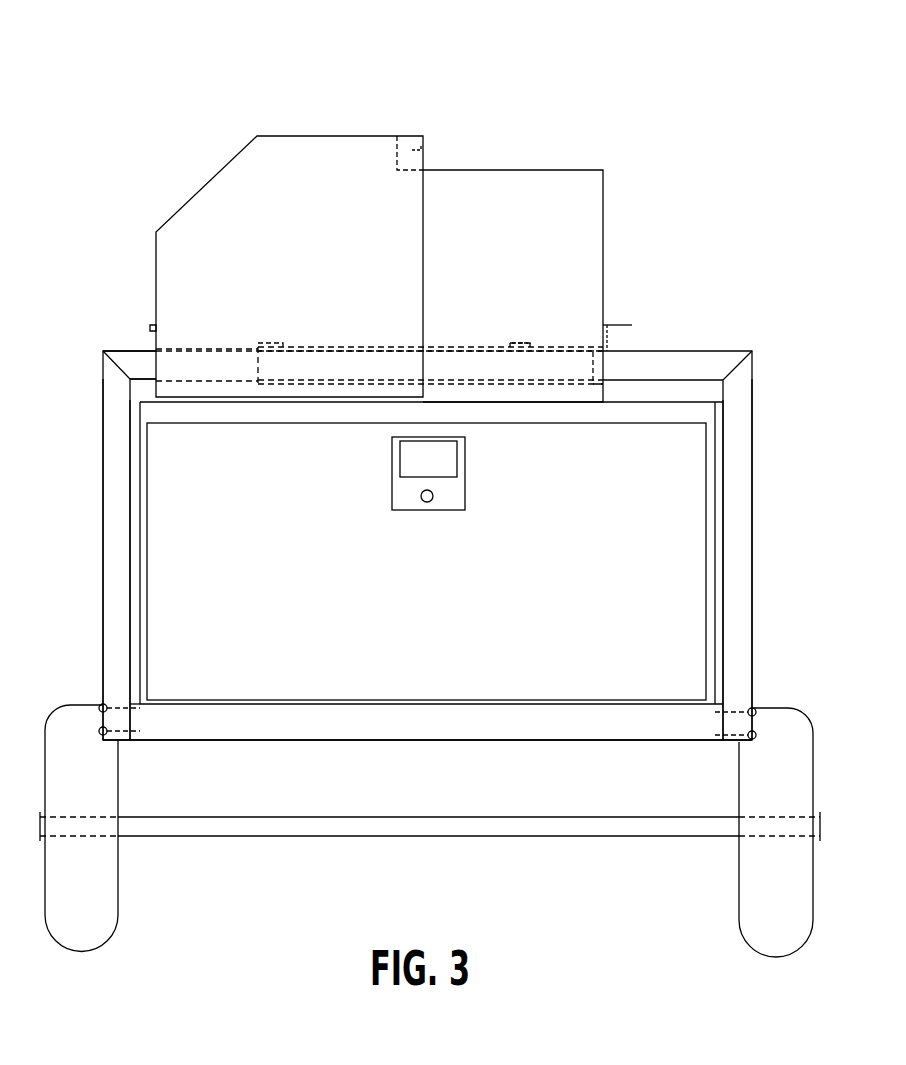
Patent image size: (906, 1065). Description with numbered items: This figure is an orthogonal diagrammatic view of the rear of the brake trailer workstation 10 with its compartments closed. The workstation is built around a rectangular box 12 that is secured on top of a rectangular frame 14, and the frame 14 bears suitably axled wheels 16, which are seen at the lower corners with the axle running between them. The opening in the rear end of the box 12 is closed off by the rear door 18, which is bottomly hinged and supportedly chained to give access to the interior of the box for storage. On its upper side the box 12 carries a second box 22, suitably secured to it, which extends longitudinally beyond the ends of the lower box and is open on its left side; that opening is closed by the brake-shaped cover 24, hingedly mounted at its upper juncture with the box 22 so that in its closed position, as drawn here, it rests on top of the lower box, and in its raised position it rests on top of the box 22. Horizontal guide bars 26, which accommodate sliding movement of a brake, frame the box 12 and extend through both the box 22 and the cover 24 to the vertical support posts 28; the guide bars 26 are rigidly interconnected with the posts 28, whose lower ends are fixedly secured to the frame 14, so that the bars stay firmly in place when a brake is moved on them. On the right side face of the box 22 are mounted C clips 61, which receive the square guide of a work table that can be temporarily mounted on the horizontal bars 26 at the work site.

The brake trailer workstation 10 is at (353, 78).
The rectangular box 12 is at (711, 402).
The rectangular frame 14 is at (135, 742).
The wheels 16 is at (80, 718).
The rear door 18 is at (596, 498).
The box 22 is at (470, 268).
The brake-shaped cover 24 is at (293, 268).
The horizontal guide bars 26 is at (133, 362).
The vertical support posts 28 is at (113, 540).
The C clips 61 is at (626, 325).